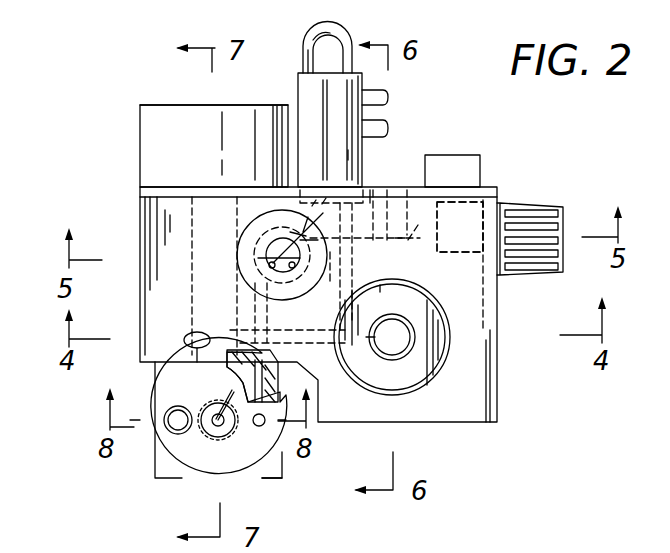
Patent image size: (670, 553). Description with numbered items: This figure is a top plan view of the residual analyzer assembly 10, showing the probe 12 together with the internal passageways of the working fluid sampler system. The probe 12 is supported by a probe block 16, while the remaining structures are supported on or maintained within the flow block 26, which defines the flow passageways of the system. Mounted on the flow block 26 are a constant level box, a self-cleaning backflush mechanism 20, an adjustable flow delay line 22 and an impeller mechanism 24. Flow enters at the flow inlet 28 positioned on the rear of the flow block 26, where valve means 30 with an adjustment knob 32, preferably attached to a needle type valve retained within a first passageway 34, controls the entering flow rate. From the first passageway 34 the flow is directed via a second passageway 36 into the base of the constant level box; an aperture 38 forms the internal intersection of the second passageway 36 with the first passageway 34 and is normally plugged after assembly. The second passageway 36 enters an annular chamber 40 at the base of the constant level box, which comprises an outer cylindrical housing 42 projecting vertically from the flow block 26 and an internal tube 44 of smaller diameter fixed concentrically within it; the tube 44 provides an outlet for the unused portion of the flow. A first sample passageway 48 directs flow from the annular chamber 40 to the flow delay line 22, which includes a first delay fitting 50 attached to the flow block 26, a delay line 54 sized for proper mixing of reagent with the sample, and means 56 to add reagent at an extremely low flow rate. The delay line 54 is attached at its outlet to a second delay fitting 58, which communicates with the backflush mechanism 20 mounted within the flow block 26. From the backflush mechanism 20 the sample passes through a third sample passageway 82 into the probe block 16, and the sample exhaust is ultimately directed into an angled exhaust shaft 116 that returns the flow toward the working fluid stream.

The residual analyzer assembly 10 is at (56, 116).
The probe 12 is at (193, 473).
The probe block 16 is at (270, 475).
The self-cleaning backflush mechanism 20 is at (214, 52).
The adjustable flow delay line 22 is at (332, 32).
The impeller mechanism 24 is at (140, 143).
The flow block 26 is at (488, 400).
The flow inlet 28 is at (500, 148).
The valve means 30 is at (462, 233).
The adjustment knob 32 is at (557, 212).
The first passageway 34 is at (408, 240).
The second passageway 36 is at (393, 273).
The aperture 38 is at (390, 205).
The annular chamber 40 is at (418, 365).
The outer cylindrical housing 42 is at (430, 292).
The internal tube 44 is at (413, 343).
The first sample passageway 48 is at (282, 264).
The first delay fitting 50 is at (357, 153).
The delay line 54 is at (315, 35).
The reagent adding means 56 is at (383, 122).
The second delay fitting 58 is at (303, 86).
The third sample passageway 82 is at (260, 318).
The angled exhaust shaft 116 is at (325, 408).